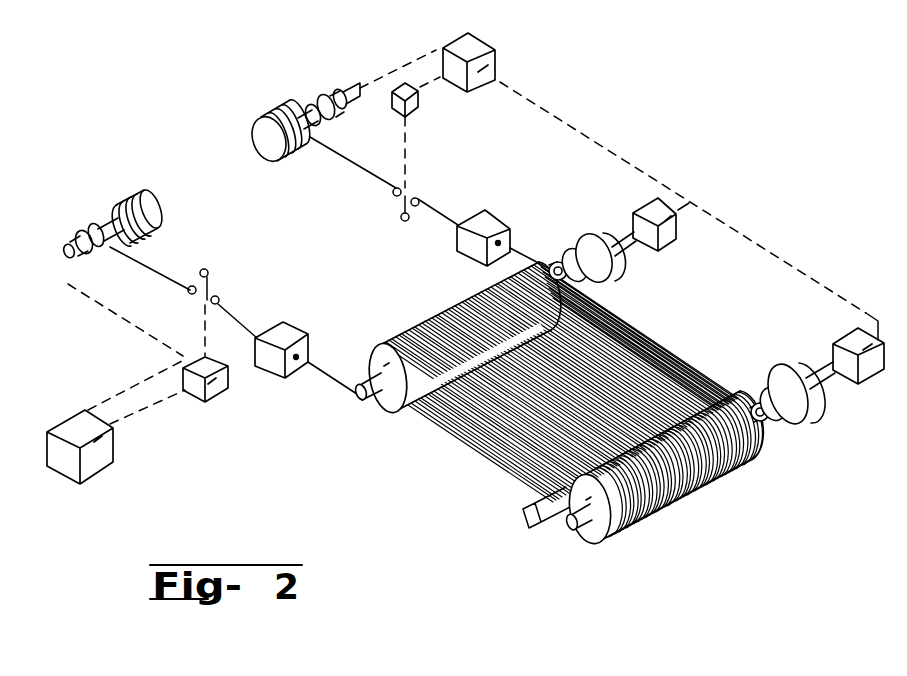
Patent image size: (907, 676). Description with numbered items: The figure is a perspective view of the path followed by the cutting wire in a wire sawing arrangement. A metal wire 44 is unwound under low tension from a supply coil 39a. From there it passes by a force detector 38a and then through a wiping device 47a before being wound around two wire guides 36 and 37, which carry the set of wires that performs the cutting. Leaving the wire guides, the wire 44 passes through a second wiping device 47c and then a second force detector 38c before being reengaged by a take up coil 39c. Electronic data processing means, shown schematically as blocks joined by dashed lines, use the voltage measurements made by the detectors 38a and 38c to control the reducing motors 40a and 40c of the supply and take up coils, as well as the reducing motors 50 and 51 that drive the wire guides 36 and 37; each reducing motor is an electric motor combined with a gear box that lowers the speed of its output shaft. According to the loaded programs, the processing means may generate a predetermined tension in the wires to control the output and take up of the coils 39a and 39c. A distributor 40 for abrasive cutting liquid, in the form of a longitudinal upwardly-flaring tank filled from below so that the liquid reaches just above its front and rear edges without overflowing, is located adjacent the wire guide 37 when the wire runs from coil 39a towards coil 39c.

The wire guide 36 is at (385, 402).
The wire guide 37 is at (590, 531).
The force detector 38a is at (208, 270).
The force detector 38c is at (401, 222).
The supply coil 39a is at (143, 192).
The take up coil 39c is at (283, 116).
The distributor 40 is at (522, 527).
The reducing motor 40a is at (89, 227).
The reducing motor 40c is at (323, 92).
The metal wire 44 is at (158, 272).
The wiping device 47a is at (292, 327).
The wiping device 47c is at (493, 215).
The reducing motor 50 is at (606, 271).
The reducing motor 51 is at (797, 366).